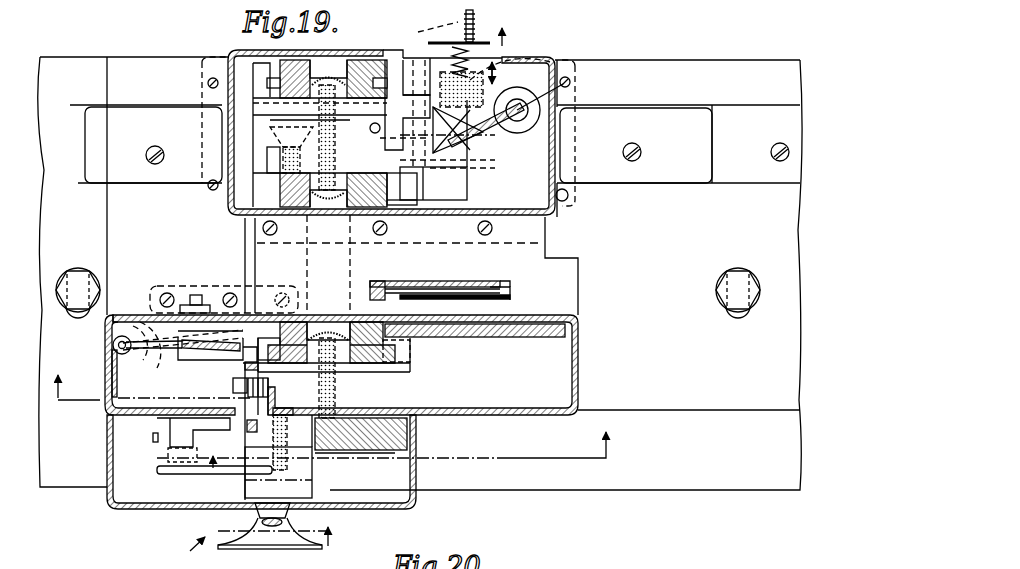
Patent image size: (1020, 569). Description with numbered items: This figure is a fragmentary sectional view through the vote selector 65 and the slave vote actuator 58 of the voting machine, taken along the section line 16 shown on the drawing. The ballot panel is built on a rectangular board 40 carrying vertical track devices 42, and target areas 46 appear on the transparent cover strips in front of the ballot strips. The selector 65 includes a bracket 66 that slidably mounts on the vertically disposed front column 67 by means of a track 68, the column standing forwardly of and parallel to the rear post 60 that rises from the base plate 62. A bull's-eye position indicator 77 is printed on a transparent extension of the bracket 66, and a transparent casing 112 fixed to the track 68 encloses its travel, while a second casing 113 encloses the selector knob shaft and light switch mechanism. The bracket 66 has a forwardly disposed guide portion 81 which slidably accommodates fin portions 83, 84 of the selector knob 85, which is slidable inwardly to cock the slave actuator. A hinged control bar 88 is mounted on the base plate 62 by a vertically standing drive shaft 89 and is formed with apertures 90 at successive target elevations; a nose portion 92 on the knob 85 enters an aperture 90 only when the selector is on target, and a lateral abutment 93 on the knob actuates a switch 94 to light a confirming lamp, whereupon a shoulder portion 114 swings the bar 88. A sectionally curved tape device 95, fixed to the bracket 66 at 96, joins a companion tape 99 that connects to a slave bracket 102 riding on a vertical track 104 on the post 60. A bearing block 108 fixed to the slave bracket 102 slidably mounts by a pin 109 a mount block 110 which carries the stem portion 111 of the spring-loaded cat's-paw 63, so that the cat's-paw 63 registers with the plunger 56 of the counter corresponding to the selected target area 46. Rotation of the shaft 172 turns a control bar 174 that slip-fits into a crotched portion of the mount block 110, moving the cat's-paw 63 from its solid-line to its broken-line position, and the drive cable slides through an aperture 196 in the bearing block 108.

The section line 16— 16 is at (338, 407).
The rectangular board 40 is at (510, 284).
The vertical track devices 42 is at (500, 297).
The target areas 46 is at (445, 292).
The plunger 56 is at (475, 33).
The slave vote actuator 58 is at (225, 47).
The post 60 is at (368, 55).
The base plate 62 is at (668, 253).
The cat's-paw 63 is at (426, 32).
The vote selector 65 is at (186, 550).
The bracket 66 is at (408, 353).
The front column 67 is at (98, 407).
The track 68 is at (375, 365).
The vote selector position indicator 77 is at (450, 340).
The guide portion 81 is at (412, 446).
The fin portion 83 is at (315, 473).
The fin portion 84 is at (277, 447).
The selector knob 85 is at (263, 548).
The control bar 88 is at (205, 352).
The drive shaft 89 is at (118, 345).
The apertures 90 is at (145, 352).
The nose portion 92 is at (146, 302).
The lateral abutment 93 is at (160, 476).
The switch 94 is at (190, 446).
The tape device 95 is at (310, 207).
The tape fixing point 96 is at (325, 375).
The companion tape 99 is at (308, 55).
The slave bracket 102 is at (398, 97).
The vertical track 104 is at (366, 54).
The bearing block 108 is at (402, 210).
The pin 109 is at (412, 178).
The mount block 110 is at (460, 150).
The stem portion 111 is at (480, 50).
The casing 112 is at (580, 350).
The casing 113 is at (413, 500).
The shoulder portion 114 is at (230, 362).
The shaft 172 is at (571, 82).
The control bar 174 is at (548, 47).
The aperture 196 is at (370, 128).